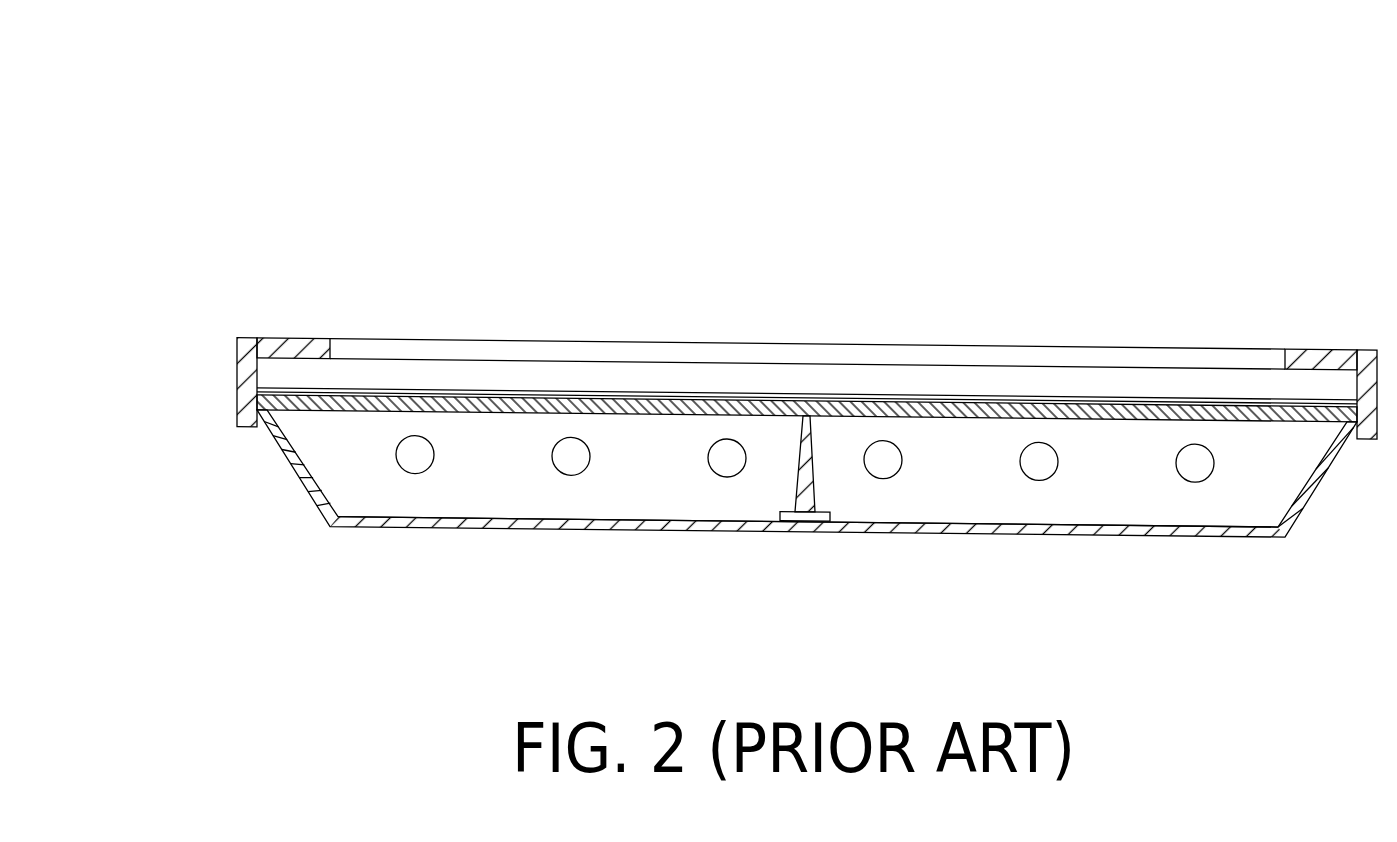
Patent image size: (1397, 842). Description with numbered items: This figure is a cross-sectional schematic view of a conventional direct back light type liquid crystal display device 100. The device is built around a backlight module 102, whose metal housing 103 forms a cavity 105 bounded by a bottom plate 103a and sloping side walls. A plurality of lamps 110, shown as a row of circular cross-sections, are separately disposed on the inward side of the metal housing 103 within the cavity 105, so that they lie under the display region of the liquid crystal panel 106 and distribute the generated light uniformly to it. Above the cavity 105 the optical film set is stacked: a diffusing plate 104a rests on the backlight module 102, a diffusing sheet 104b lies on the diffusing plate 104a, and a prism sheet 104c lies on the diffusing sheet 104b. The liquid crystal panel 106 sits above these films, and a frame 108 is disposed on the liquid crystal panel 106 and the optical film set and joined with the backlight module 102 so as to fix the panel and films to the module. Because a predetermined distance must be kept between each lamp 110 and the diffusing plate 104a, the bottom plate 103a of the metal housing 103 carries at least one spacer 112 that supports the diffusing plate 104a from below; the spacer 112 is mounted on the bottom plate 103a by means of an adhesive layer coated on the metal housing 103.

The liquid crystal display device 100 is at (143, 163).
The backlight module 102 is at (272, 448).
The metal housing 103 is at (320, 508).
The bottom plate 103a is at (518, 516).
The diffusing plate 104a is at (257, 402).
The diffusing sheet 104b is at (257, 391).
The prism sheet 104c is at (257, 386).
The cavity 105 is at (325, 478).
The liquid crystal panel 106 is at (258, 360).
The frame 108 is at (245, 356).
The lamp 110 is at (571, 456).
The spacer 112 is at (810, 472).